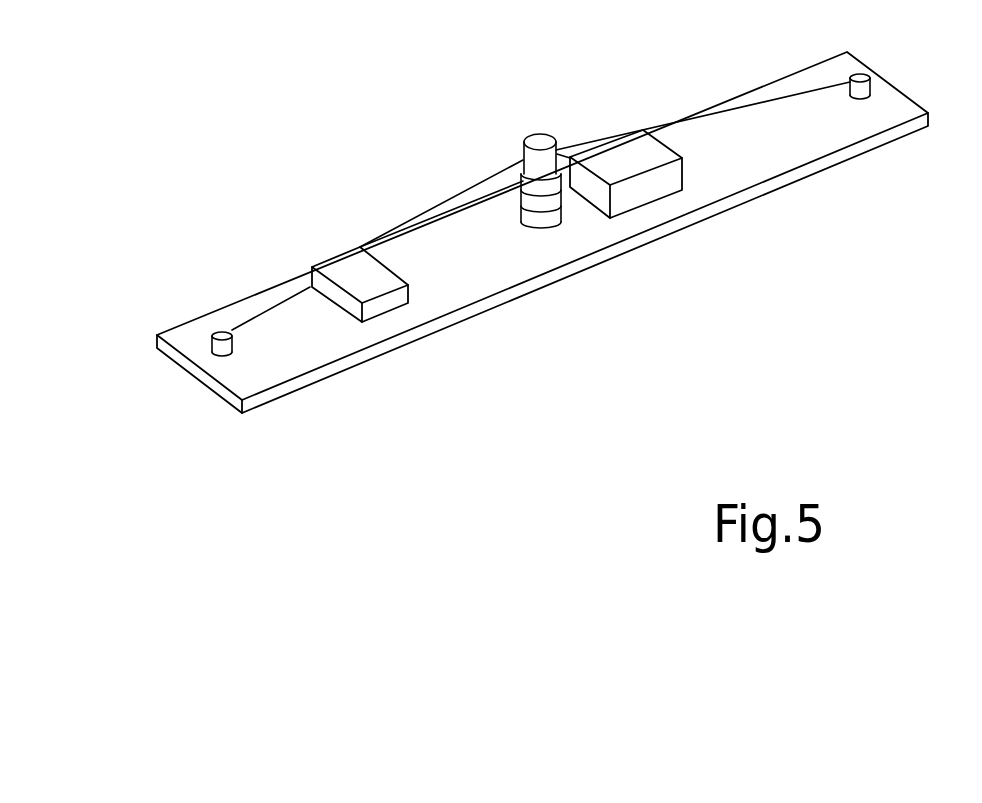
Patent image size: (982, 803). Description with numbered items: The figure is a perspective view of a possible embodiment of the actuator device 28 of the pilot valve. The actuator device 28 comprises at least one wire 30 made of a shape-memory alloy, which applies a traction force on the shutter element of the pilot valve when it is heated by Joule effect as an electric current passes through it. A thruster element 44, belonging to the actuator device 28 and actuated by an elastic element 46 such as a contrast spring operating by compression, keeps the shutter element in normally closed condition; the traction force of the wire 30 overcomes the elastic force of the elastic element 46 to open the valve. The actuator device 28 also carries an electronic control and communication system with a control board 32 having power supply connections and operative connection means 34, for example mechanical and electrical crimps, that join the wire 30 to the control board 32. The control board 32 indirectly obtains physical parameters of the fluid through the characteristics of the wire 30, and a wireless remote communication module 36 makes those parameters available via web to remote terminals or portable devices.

The actuator device 28 is at (773, 206).
The wire made of a shape-memory alloy 30 is at (477, 192).
The control board 32 is at (645, 164).
The operative connection means 34 is at (217, 351).
The wireless remote communication module 36 is at (373, 288).
The thruster element 44 is at (536, 140).
The elastic element 46 is at (548, 212).